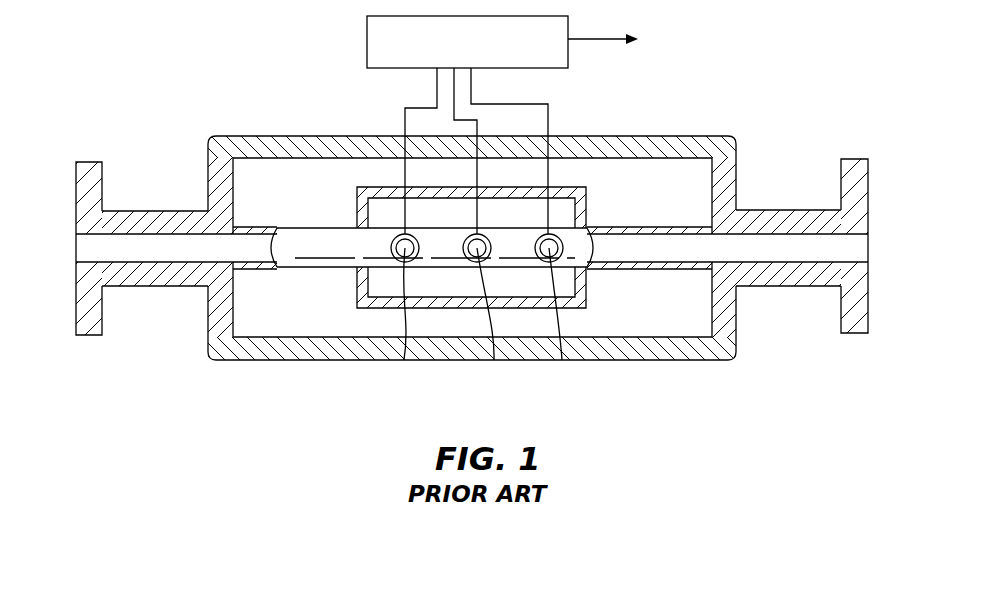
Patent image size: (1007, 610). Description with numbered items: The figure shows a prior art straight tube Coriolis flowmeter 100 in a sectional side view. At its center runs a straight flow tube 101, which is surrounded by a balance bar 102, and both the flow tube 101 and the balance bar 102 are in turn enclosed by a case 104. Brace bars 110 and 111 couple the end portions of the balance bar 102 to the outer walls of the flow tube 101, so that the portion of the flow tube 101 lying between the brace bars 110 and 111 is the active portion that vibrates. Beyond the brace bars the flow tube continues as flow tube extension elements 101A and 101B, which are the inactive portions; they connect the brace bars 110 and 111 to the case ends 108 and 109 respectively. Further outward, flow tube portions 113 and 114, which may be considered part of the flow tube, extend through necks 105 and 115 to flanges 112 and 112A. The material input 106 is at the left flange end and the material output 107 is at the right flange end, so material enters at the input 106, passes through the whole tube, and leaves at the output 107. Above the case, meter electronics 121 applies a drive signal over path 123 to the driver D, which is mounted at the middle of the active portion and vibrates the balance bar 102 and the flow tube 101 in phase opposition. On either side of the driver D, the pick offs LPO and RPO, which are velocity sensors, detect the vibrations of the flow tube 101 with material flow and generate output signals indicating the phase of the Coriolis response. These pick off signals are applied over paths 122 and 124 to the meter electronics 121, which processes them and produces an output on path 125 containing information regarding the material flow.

The straight tube Coriolis flowmeter 100 is at (758, 72).
The flow tube 101 is at (469, 217).
The flow tube extension element 101A is at (344, 256).
The flow tube extension element 101B is at (667, 256).
The balance bar 102 is at (463, 245).
The case 104 is at (664, 136).
The neck 105 is at (178, 286).
The material input 106 is at (153, 233).
The material output 107 is at (754, 228).
The case end 108 is at (208, 185).
The case end 109 is at (736, 310).
The brace bar 110 is at (357, 210).
The brace bar 111 is at (588, 283).
The flange 112 is at (95, 161).
The flange 112A is at (845, 160).
The flow tube portion 113 is at (193, 257).
The flow tube portion 114 is at (777, 256).
The neck 115 is at (797, 210).
The meter electronics 121 is at (367, 23).
The path 122 is at (437, 86).
The path 123 is at (455, 82).
The path 124 is at (548, 112).
The path 125 is at (604, 36).
The left pick off LPO is at (403, 360).
The driver D is at (493, 360).
The right pick off RPO is at (565, 360).